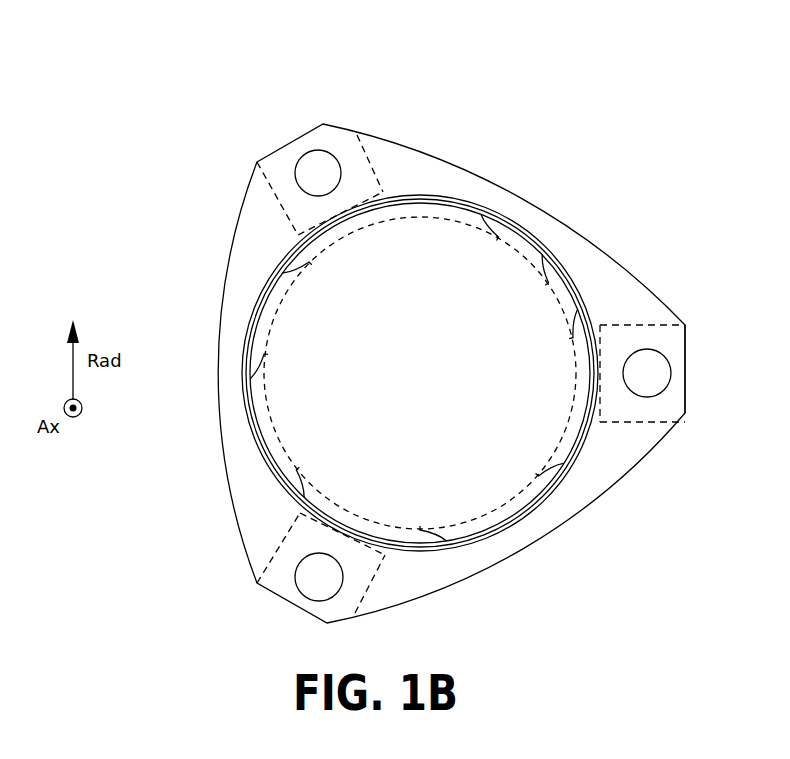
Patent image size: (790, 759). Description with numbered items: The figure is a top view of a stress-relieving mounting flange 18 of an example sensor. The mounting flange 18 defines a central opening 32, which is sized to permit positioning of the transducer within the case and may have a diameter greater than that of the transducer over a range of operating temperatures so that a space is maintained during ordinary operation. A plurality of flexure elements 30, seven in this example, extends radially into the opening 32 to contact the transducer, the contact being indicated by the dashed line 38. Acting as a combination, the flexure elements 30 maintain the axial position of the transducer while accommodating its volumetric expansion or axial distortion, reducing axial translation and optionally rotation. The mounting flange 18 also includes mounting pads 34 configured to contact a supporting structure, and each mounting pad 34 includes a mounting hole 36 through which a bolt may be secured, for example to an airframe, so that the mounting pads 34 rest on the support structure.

The mounting flange 18 is at (467, 324).
The flexure elements 30 is at (500, 224).
The opening 32 is at (435, 376).
The mounting pads 34 is at (615, 330).
The mounting hole 36 is at (662, 375).
The dashed line 38 is at (552, 280).